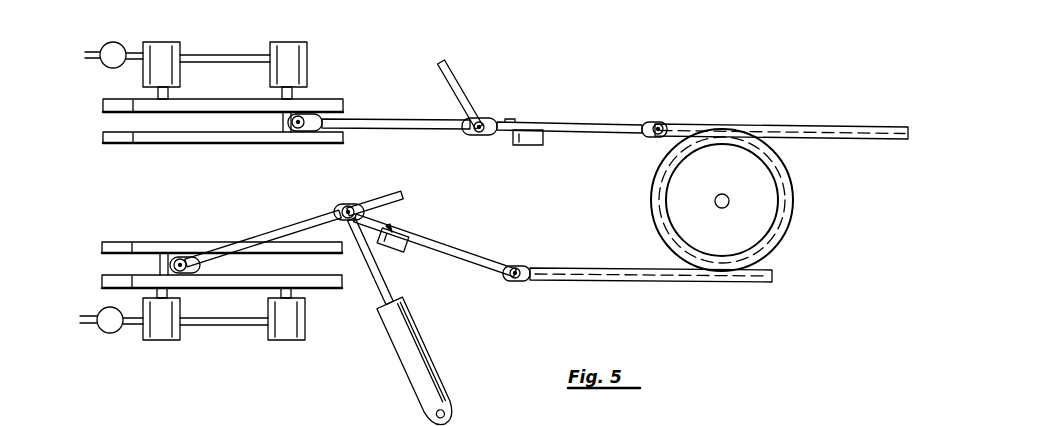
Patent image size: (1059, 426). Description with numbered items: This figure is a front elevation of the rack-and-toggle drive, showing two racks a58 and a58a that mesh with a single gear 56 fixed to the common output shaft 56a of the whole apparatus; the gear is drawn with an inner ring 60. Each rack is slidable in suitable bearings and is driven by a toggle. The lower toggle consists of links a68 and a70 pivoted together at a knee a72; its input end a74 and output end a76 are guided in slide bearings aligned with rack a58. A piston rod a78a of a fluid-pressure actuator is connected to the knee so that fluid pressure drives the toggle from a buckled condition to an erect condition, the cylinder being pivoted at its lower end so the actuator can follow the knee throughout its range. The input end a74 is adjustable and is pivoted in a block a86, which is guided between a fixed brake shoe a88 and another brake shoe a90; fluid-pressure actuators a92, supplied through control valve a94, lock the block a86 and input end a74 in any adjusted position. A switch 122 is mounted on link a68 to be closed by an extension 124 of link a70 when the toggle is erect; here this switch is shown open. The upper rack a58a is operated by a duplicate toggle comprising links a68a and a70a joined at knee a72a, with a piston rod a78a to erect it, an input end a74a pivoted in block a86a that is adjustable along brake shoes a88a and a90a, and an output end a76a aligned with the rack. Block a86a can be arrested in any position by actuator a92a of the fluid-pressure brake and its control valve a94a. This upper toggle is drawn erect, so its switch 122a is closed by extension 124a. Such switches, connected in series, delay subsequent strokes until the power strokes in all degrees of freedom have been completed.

The control valve a94a is at (116, 42).
The fluid-pressure actuator a92a is at (273, 47).
The brake shoe a90a is at (193, 100).
The brake shoe a88a is at (205, 146).
The block a86a is at (276, 130).
The input end of toggle a74a is at (300, 130).
The toggle link a70a is at (397, 129).
The knee a72a is at (472, 132).
The piston rod a78a is at (457, 88).
The extension of link 124a is at (507, 121).
The switch 122a is at (531, 146).
The toggle link a68a is at (578, 123).
The output end of toggle a76a is at (659, 124).
The rack a58a is at (875, 126).
The gear 56 is at (793, 190).
The drum rim 60 is at (777, 222).
The shaft 56a is at (742, 172).
The rack a58 is at (718, 283).
The brake shoe a88 is at (218, 222).
The brake shoe a90 is at (254, 287).
The block a86 is at (160, 253).
The input end of toggle a74 is at (172, 266).
The toggle link a70 is at (292, 226).
The knee a72 is at (348, 206).
The extension of link 124 is at (403, 196).
The switch 122 is at (398, 232).
The toggle link a68 is at (458, 247).
The output end of toggle a76 is at (520, 266).
The fluid-pressure actuator a92 is at (267, 330).
The control valve a94 is at (103, 331).